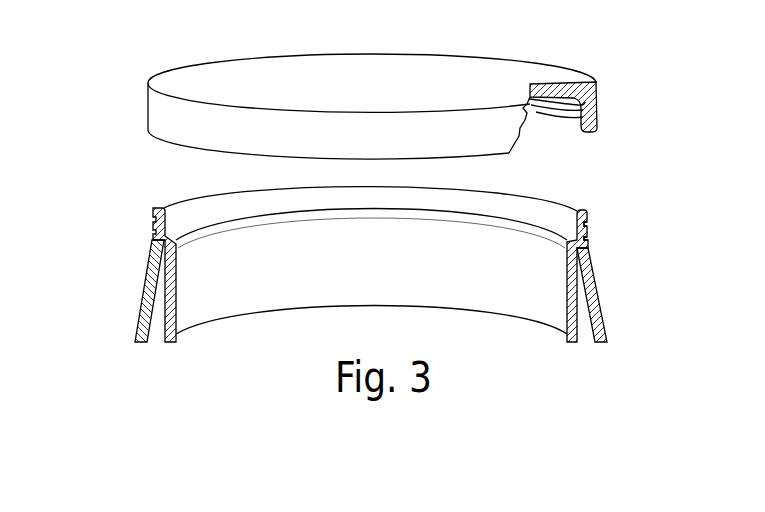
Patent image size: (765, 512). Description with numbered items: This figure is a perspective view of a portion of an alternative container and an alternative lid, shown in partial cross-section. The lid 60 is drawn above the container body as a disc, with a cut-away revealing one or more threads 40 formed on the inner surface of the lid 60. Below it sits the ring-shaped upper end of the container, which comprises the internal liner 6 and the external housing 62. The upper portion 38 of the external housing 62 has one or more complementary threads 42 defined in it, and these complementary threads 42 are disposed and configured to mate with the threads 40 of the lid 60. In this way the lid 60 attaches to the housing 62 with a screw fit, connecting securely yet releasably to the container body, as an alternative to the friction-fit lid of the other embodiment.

The lid 60 is at (516, 73).
The threads 40 is at (588, 98).
The internal liner 6 is at (582, 210).
The upper portion of the external housing 38 is at (150, 288).
The complementary threads 42 is at (588, 222).
The external housing 62 is at (601, 322).